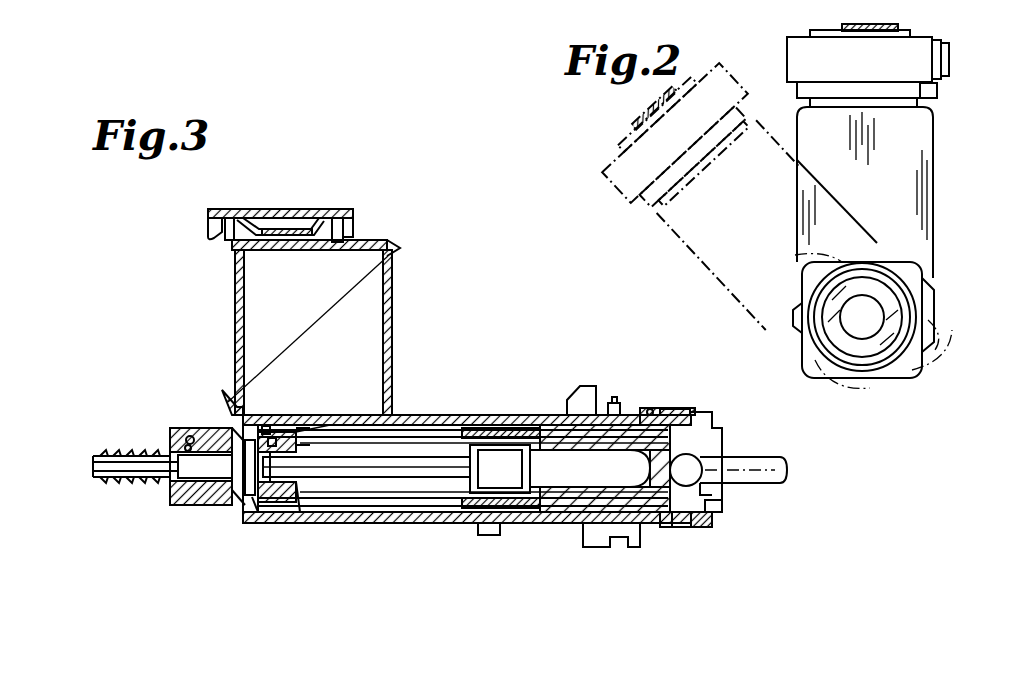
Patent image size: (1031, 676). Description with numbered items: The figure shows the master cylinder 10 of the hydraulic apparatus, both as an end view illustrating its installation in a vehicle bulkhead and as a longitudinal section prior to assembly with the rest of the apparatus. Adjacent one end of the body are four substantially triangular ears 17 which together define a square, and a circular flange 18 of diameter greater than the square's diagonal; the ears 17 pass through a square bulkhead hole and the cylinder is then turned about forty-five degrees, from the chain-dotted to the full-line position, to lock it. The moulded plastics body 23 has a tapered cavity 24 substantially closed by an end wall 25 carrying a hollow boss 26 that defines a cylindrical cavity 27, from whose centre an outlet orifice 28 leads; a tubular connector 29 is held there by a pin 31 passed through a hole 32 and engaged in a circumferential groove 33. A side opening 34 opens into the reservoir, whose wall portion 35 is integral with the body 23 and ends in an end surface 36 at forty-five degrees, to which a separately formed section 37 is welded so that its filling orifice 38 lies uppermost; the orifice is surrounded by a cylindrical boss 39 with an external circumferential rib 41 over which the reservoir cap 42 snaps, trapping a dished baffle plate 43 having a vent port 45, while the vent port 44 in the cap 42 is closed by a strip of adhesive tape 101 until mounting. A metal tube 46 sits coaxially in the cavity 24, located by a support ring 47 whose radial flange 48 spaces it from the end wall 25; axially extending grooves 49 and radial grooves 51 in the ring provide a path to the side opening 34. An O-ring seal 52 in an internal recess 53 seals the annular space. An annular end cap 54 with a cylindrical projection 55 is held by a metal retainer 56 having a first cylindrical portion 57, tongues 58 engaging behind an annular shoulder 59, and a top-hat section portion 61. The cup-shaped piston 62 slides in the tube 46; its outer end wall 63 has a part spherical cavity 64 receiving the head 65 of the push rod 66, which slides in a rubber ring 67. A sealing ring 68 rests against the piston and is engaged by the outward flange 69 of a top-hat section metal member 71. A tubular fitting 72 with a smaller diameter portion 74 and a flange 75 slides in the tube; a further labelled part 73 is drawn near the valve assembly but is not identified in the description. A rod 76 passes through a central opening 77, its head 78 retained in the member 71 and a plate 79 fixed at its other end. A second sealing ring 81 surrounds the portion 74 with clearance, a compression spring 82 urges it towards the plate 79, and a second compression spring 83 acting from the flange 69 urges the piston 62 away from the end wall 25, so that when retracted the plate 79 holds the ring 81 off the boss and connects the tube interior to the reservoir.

In FIG. 3, the master cylinder 10 is at (514, 414).
In FIG. 2, the ears 17 is at (818, 263).
In FIG. 3, the ears 17 is at (617, 402).
In FIG. 3, the circular flange 18 is at (586, 388).
In FIG. 3, the body 23 is at (450, 415).
In FIG. 3, the cavity 24 is at (490, 530).
In FIG. 3, the end wall 25 is at (246, 498).
In FIG. 3, the hollow boss 26 is at (268, 506).
In FIG. 3, the cylindrical cavity 27 is at (240, 440).
In FIG. 3, the outlet orifice 28 is at (226, 436).
In FIG. 3, the tubular connector 29 is at (162, 476).
In FIG. 3, the pin 31 is at (183, 445).
In FIG. 3, the hole 32 is at (170, 432).
In FIG. 3, the circumferential groove 33 is at (180, 490).
In FIG. 3, the side opening 34 is at (388, 416).
In FIG. 2, the reservoir wall portion 35 is at (905, 190).
In FIG. 3, the reservoir wall portion 35 is at (392, 322).
In FIG. 3, the end surface 36 is at (400, 253).
In FIG. 3, the separately formed reservoir section 37 is at (238, 298).
In FIG. 3, the filling orifice 38 is at (290, 251).
In FIG. 2, the cylindrical boss 39 is at (905, 106).
In FIG. 3, the cylindrical boss 39 is at (346, 236).
In FIG. 3, the external circumferential rib 41 is at (236, 226).
In FIG. 2, the reservoir cap 42 is at (925, 58).
In FIG. 3, the reservoir cap 42 is at (332, 212).
In FIG. 3, the dished baffle plate 43 is at (290, 228).
In FIG. 3, the vent port 44 is at (250, 220).
In FIG. 3, the vent port 45 is at (300, 232).
In FIG. 3, the metal tube 46 is at (286, 520).
In FIG. 3, the support ring 47 is at (252, 502).
In FIG. 3, the radial flange 48 is at (262, 430).
In FIG. 3, the axially extending grooves 49 is at (270, 440).
In FIG. 3, the radial grooves 51 is at (255, 450).
In FIG. 3, the O-ring seal 52 is at (706, 428).
In FIG. 3, the internal recess 53 is at (698, 418).
In FIG. 3, the annular end cap 54 is at (720, 446).
In FIG. 3, the cylindrical projection 55 is at (672, 535).
In FIG. 3, the metal retainer 56 is at (672, 546).
In FIG. 3, the first cylindrical portion 57 is at (690, 408).
In FIG. 3, the tongues 58 is at (645, 412).
In FIG. 3, the annular shoulder 59 is at (668, 415).
In FIG. 3, the top-hat section portion 61 is at (713, 528).
In FIG. 3, the piston 62 is at (585, 549).
In FIG. 3, the outer end wall 63 is at (735, 462).
In FIG. 3, the part spherical cavity 64 is at (640, 470).
In FIG. 3, the head 65 is at (696, 533).
In FIG. 3, the push rod 66 is at (776, 472).
In FIG. 3, the rubber ring 67 is at (736, 497).
In FIG. 3, the sealing ring 68 is at (536, 440).
In FIG. 3, the outward flange 69 is at (530, 528).
In FIG. 3, the top-hat section metal member 71 is at (456, 520).
In FIG. 3, the tubular fitting 72 is at (400, 426).
In FIG. 3, the valve spring seat 73 is at (258, 511).
In FIG. 3, the smaller diameter portion 74 is at (300, 521).
In FIG. 3, the flange 75 is at (321, 492).
In FIG. 3, the rod 76 is at (390, 488).
In FIG. 3, the central opening 77 is at (470, 450).
In FIG. 3, the head 78 is at (486, 470).
In FIG. 3, the plate 79 is at (222, 509).
In FIG. 3, the second sealing ring 81 is at (300, 430).
In FIG. 3, the compression spring 82 is at (305, 445).
In FIG. 3, the second compression spring 83 is at (420, 503).
In FIG. 2, the strip of adhesive tape 101 is at (836, 26).